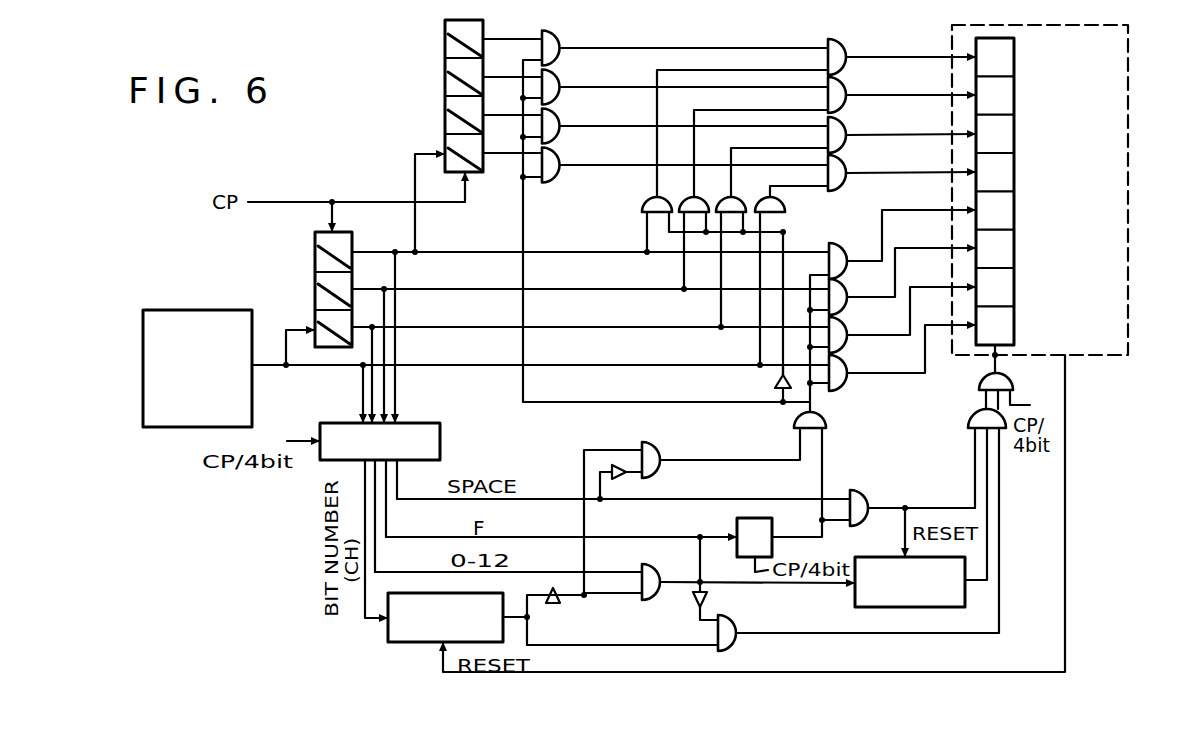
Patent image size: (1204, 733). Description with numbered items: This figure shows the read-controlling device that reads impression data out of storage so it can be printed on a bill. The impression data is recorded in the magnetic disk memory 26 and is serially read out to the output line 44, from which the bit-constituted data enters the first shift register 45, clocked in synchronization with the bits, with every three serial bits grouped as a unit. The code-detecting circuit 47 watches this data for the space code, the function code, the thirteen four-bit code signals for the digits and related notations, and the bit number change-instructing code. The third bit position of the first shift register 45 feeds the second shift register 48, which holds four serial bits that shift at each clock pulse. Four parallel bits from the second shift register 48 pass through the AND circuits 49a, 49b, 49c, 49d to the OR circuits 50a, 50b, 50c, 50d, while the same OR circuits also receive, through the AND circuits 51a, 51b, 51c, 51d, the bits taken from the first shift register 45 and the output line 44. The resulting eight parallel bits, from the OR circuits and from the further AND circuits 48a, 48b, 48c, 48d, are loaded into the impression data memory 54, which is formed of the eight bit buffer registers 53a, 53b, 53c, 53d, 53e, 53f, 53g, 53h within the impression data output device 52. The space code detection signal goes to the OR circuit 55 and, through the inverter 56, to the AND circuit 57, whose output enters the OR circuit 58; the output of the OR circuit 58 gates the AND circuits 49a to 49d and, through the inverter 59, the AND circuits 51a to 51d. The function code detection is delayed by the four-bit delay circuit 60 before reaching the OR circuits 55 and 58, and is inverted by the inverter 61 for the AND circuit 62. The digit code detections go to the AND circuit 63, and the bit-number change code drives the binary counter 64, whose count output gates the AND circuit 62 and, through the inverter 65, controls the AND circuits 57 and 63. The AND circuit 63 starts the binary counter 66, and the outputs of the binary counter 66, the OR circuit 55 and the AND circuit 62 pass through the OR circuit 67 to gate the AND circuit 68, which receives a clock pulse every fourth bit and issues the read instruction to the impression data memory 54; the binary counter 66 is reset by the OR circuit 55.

The magnetic disk memory 26 is at (193, 310).
The output line 44 is at (268, 366).
The first shift register 45 is at (315, 262).
The code-detecting circuit 47 is at (440, 452).
The second shift register 48 is at (445, 90).
The AND circuit 48a is at (836, 252).
The AND circuit 48b is at (838, 290).
The AND circuit 48c is at (838, 328).
The AND circuit 48d is at (840, 366).
The AND circuit 49a is at (548, 40).
The AND circuit 49b is at (548, 79).
The AND circuit 49c is at (548, 118).
The AND circuit 49d is at (548, 157).
The OR circuit 50a is at (836, 48).
The OR circuit 50b is at (836, 86).
The OR circuit 50c is at (836, 126).
The OR circuit 50d is at (836, 164).
The AND circuit 51a is at (647, 202).
The AND circuit 51b is at (684, 202).
The AND circuit 51c is at (721, 202).
The AND circuit 51d is at (760, 202).
The impression data output device 52 is at (1128, 172).
The bit buffer register 53a is at (1014, 57).
The bit buffer register 53b is at (1014, 95).
The bit buffer register 53c is at (1014, 134).
The bit buffer register 53d is at (1014, 172).
The bit buffer register 53e is at (1014, 210).
The bit buffer register 53f is at (1014, 249).
The bit buffer register 53g is at (1014, 287).
The bit buffer register 53h is at (1014, 325).
The impression data memory 54 is at (1014, 160).
The OR circuit 55 is at (860, 500).
The inverter 56 is at (620, 478).
The AND circuit 57 is at (650, 450).
The OR circuit 58 is at (818, 418).
The inverter 59 is at (775, 381).
The 4-bit delay circuit 60 is at (772, 522).
The inverter 61 is at (693, 600).
The AND circuit 62 is at (726, 624).
The AND circuit 63 is at (650, 574).
The binary counter 64 is at (405, 642).
The inverter 65 is at (555, 604).
The binary counter 66 is at (855, 600).
The OR circuit 67 is at (978, 418).
The AND circuit 68 is at (1006, 381).